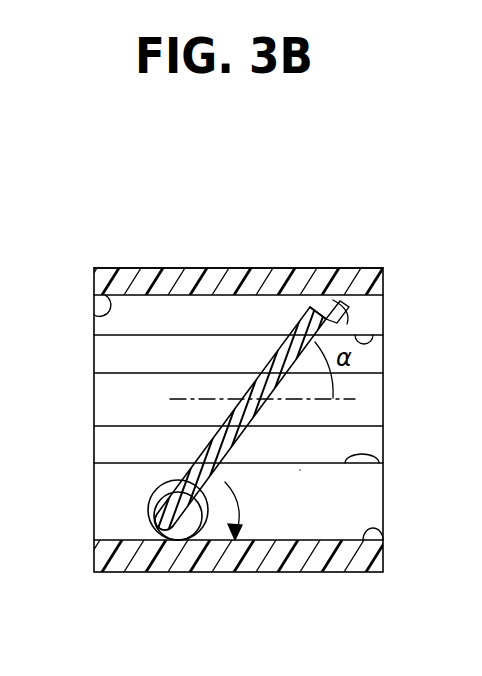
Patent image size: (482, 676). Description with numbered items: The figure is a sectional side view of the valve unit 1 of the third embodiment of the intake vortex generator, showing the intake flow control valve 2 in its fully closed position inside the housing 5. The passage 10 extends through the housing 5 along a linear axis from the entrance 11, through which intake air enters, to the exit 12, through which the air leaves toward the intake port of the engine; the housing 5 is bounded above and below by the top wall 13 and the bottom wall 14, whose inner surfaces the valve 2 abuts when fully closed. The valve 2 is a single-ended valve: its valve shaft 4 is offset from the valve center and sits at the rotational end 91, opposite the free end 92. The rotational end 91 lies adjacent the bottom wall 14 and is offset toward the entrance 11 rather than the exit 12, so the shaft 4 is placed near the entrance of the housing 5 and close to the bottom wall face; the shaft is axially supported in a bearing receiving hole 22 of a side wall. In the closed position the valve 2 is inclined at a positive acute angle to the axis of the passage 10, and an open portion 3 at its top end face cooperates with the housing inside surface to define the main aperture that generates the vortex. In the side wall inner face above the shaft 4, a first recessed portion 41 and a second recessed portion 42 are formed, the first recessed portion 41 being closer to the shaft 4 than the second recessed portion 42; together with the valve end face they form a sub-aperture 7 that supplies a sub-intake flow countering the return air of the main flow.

The valve unit 1 is at (98, 215).
The intake flow control valve 2 is at (295, 320).
The open portion 3 is at (327, 305).
The valve shaft 4 is at (193, 532).
The housing 5 is at (153, 267).
The sub-aperture 7 is at (367, 435).
The passage 10 is at (305, 510).
The entrance 11 is at (94, 306).
The exit 12 is at (383, 540).
The top wall 13 is at (196, 268).
The bottom wall 14 is at (240, 566).
The bearing receiving hole 22 is at (154, 523).
The first recessed portion 41 is at (383, 464).
The second recessed portion 42 is at (383, 343).
The rotational end 91 is at (152, 503).
The free end 92 is at (342, 318).